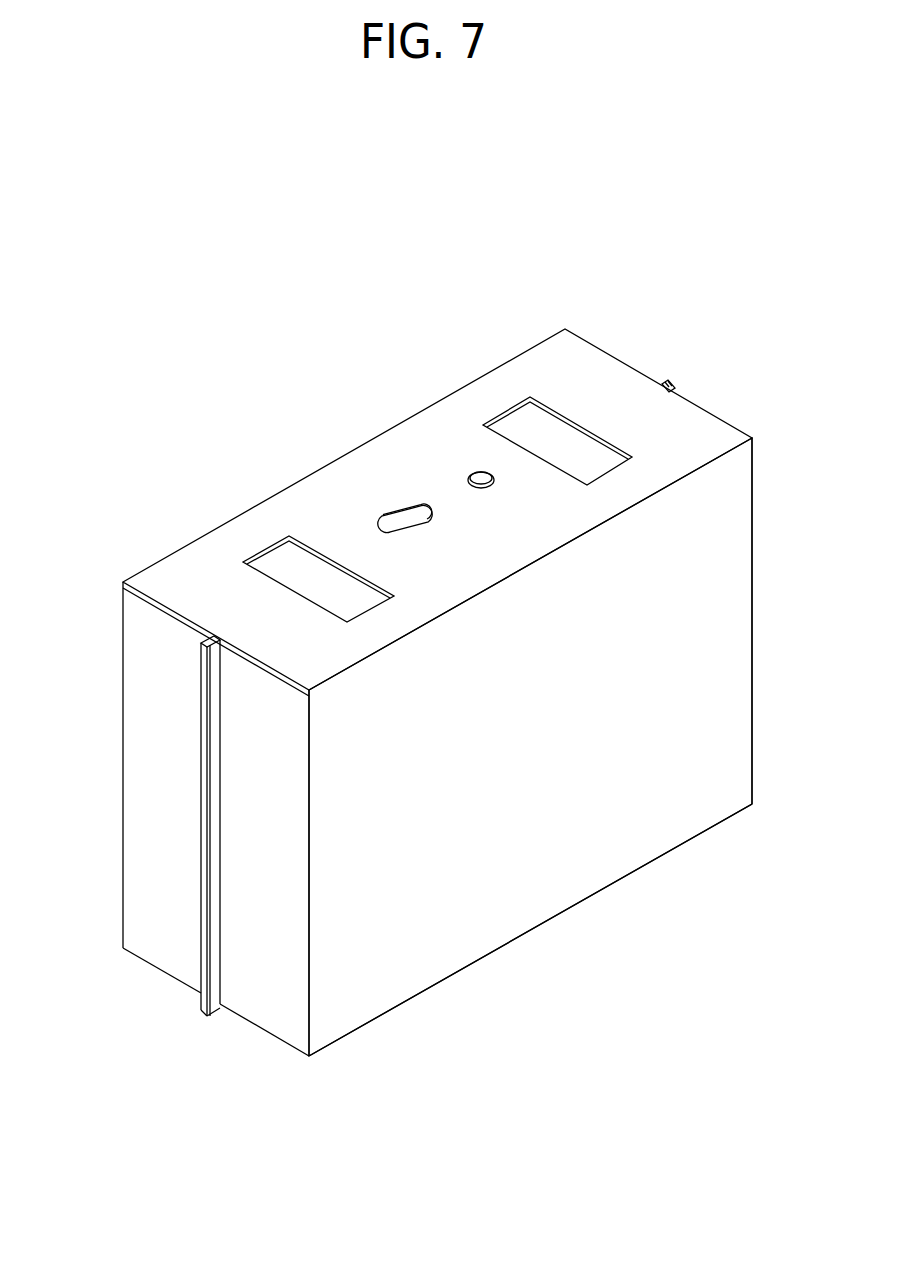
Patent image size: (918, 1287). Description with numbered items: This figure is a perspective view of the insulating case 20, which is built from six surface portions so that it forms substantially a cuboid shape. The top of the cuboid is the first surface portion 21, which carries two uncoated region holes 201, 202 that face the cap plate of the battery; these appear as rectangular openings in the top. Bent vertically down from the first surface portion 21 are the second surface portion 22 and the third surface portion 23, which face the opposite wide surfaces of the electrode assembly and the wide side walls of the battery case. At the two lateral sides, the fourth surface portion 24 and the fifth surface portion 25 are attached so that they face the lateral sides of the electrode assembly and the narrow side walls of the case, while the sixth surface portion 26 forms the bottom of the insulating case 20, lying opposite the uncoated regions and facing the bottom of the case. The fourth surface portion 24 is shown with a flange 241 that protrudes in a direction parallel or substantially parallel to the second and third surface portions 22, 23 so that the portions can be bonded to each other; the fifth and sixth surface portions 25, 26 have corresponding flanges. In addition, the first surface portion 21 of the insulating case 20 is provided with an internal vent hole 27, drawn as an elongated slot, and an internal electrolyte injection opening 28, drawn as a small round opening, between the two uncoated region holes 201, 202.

The insulating case 20 is at (303, 320).
The first surface portion 21 is at (200, 565).
The second surface portion 22 is at (122, 653).
The third surface portion 23 is at (423, 963).
The fourth surface portion 24 is at (258, 1004).
The flange 241 is at (200, 967).
The fifth surface portion 25 is at (752, 610).
The sixth surface portion 26 is at (357, 1032).
The internal vent hole 27 is at (398, 515).
The internal electrolyte injection opening 28 is at (480, 470).
The uncoated region hole 201 is at (272, 545).
The uncoated region hole 202 is at (513, 407).